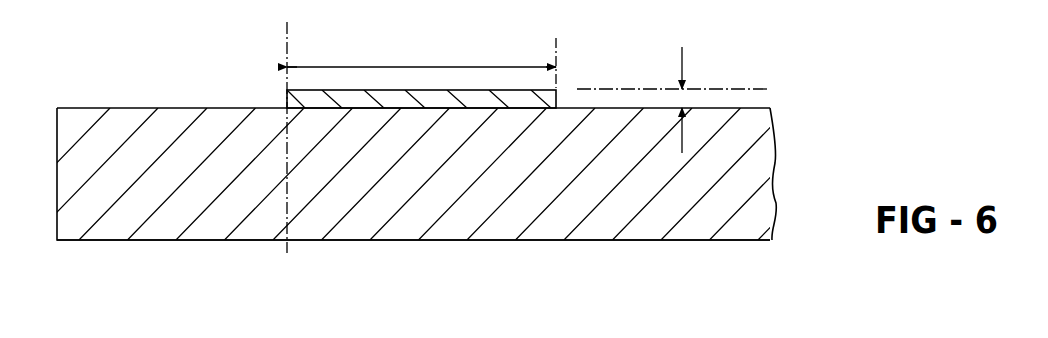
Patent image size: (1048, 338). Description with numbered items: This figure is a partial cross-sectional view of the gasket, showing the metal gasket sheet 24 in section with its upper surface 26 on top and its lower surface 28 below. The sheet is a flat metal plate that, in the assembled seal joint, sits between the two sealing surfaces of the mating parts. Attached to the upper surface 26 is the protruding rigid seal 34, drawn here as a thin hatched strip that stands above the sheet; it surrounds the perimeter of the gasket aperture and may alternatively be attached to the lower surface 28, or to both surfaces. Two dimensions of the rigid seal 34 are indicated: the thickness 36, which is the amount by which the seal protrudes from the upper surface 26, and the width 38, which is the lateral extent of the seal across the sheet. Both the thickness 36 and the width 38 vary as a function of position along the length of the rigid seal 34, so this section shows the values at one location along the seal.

The metal gasket sheet 24 is at (751, 181).
The upper surface 26 is at (757, 108).
The lower surface 28 is at (752, 242).
The protruding rigid seal 34 is at (320, 90).
The thickness 36 is at (681, 60).
The width 38 is at (486, 66).